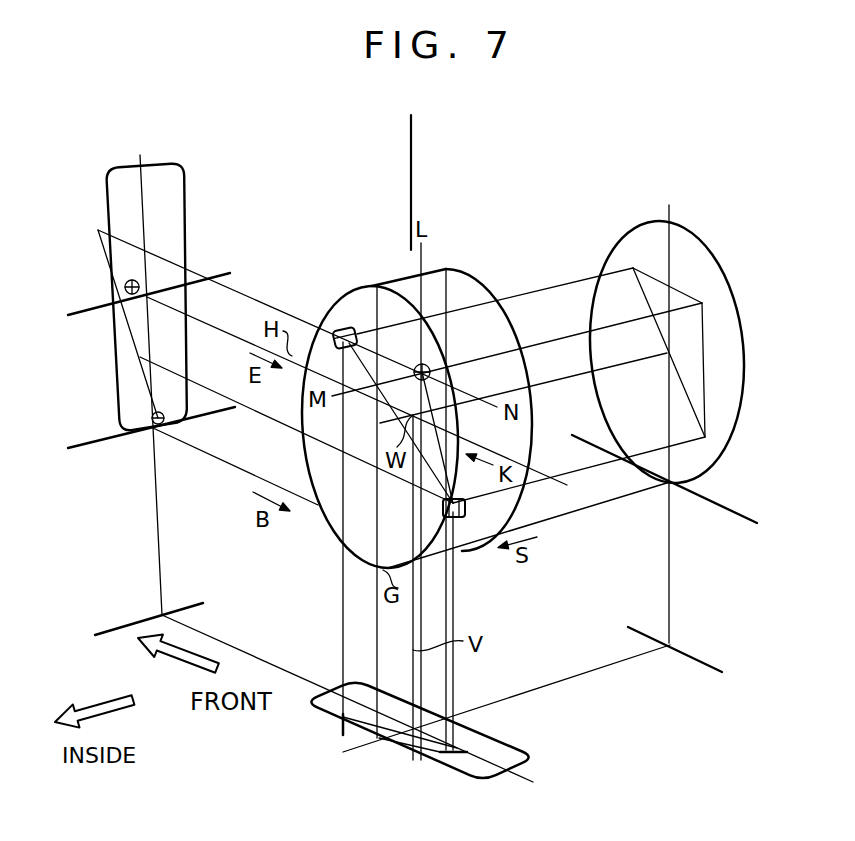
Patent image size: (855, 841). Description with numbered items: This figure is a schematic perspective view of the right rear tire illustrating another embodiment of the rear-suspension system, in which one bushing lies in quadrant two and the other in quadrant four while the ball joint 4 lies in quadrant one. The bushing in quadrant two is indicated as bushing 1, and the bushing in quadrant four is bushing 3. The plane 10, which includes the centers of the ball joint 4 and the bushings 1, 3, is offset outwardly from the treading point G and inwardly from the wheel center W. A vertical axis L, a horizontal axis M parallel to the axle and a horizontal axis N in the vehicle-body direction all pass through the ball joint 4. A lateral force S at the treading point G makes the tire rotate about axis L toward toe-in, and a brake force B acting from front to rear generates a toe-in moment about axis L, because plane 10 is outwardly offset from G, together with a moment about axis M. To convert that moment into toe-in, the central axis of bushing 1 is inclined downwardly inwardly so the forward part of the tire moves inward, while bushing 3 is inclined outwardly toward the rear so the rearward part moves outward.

The plane 10 is at (117, 273).
The bushing 1 is at (344, 328).
The bushing 3 is at (465, 507).
The ball joint 4 is at (430, 366).